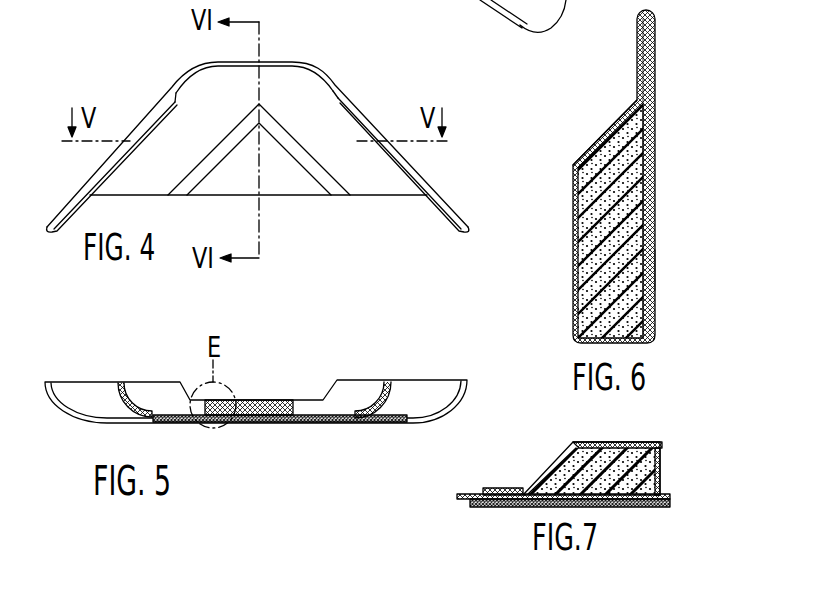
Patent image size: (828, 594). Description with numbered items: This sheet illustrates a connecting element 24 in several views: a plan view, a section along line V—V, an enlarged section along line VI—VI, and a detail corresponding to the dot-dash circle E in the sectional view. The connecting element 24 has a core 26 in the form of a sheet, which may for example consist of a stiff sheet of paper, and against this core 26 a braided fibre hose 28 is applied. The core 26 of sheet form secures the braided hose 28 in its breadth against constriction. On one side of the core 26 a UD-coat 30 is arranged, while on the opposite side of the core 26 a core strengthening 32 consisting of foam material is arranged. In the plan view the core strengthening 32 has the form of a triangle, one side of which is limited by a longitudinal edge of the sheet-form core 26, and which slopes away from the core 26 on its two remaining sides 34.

In FIG. 4, the connecting element 24 is at (370, 99).
In FIG. 5, the connecting element 24 is at (427, 425).
In FIG. 6, the core 26 is at (656, 268).
In FIG. 7, the core 26 is at (661, 492).
In FIG. 6, the braided fibre hose 28 is at (656, 200).
In FIG. 7, the braided fibre hose 28 is at (664, 446).
In FIG. 6, the UD-coat 30 is at (642, 228).
In FIG. 7, the UD-coat 30 is at (671, 497).
In FIG. 5, the core strengthening 32 is at (266, 422).
In FIG. 6, the core strengthening 32 is at (656, 155).
In FIG. 7, the core strengthening 32 is at (661, 462).
In FIG. 4, the remaining sides 34 is at (198, 178).
In FIG. 5, the remaining sides 34 is at (297, 418).
In FIG. 6, the remaining sides 34 is at (613, 124).
In FIG. 7, the remaining sides 34 is at (552, 462).